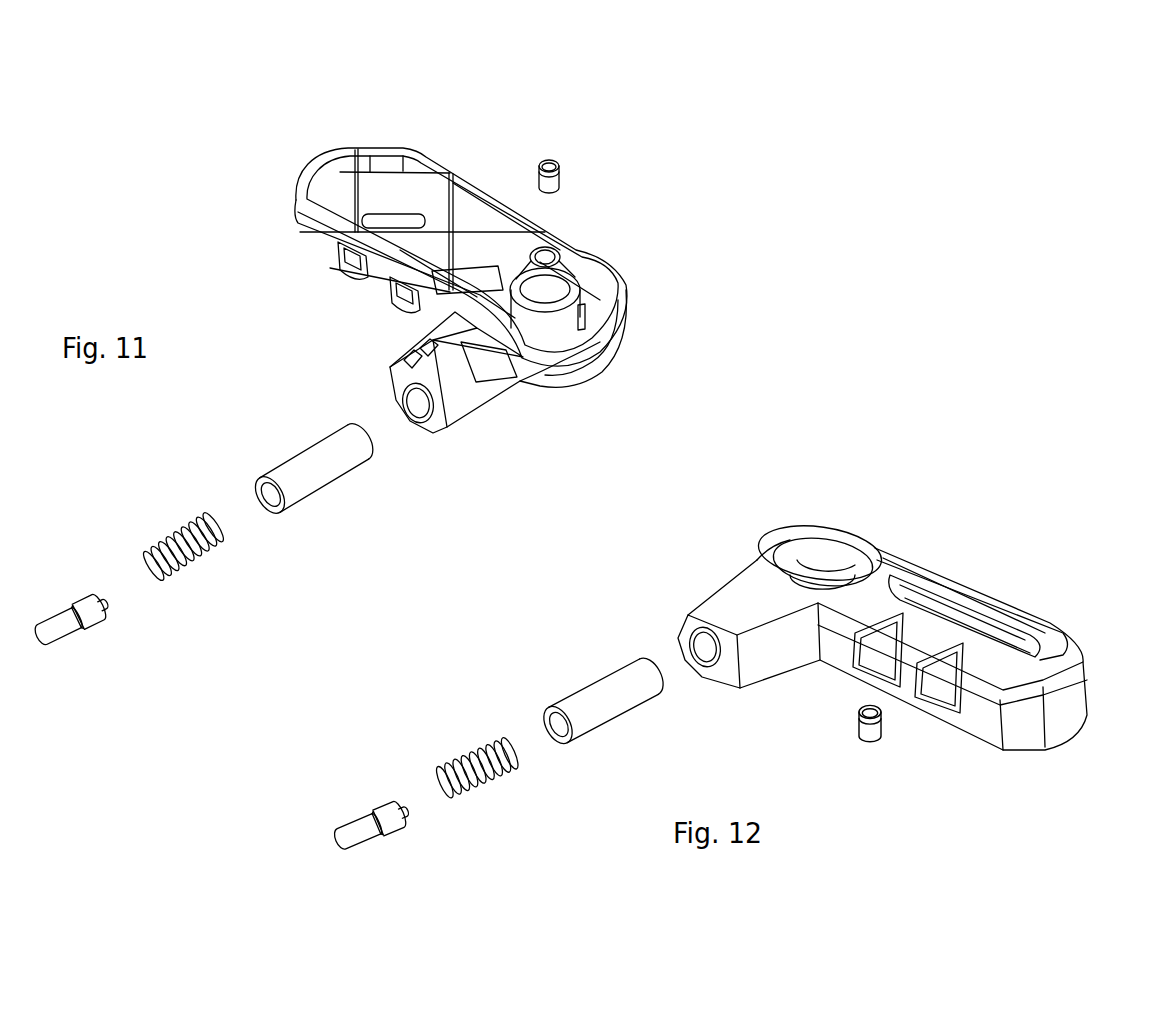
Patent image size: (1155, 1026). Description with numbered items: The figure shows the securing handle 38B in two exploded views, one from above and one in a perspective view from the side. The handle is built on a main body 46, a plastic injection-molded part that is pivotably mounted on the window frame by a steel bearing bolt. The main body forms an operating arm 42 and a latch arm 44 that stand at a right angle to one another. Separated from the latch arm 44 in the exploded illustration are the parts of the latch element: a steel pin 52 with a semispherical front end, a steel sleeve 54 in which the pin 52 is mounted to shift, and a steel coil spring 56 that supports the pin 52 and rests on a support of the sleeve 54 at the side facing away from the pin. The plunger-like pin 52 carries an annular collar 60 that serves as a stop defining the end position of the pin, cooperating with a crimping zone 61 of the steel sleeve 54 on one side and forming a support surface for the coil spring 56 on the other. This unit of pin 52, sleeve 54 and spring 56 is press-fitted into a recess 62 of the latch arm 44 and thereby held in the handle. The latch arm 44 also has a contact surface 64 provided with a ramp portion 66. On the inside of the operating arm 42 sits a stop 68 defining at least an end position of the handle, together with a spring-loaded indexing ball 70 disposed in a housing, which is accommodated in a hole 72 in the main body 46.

In FIG. 11, the cradle assembly 38B is at (594, 77).
In FIG. 12, the cradle assembly 38B is at (976, 575).
In FIG. 12, the operating arm 42 is at (995, 630).
In FIG. 11, the latch arm 44 is at (505, 403).
In FIG. 12, the latch arm 44 is at (730, 600).
In FIG. 11, the main body 46 is at (428, 165).
In FIG. 12, the main body 46 is at (885, 562).
In FIG. 11, the pin 52 is at (65, 640).
In FIG. 12, the pin 52 is at (357, 847).
In FIG. 11, the steel sleeve 54 is at (328, 453).
In FIG. 12, the steel sleeve 54 is at (600, 693).
In FIG. 11, the coil spring 56 is at (180, 540).
In FIG. 12, the coil spring 56 is at (473, 757).
In FIG. 11, the annular collar 60 is at (78, 600).
In FIG. 12, the annular collar 60 is at (385, 815).
In FIG. 11, the crimping zone 61 is at (283, 510).
In FIG. 12, the crimping zone 61 is at (577, 740).
In FIG. 11, the recess 62 is at (478, 372).
In FIG. 12, the recess 62 is at (705, 650).
In FIG. 11, the contact surface 64 is at (403, 354).
In FIG. 11, the ramp portion 66 is at (452, 390).
In FIG. 11, the stop 68 is at (593, 307).
In FIG. 11, the indexing ball 70 is at (560, 165).
In FIG. 12, the indexing ball 70 is at (878, 742).
In FIG. 11, the hole 72 is at (553, 255).